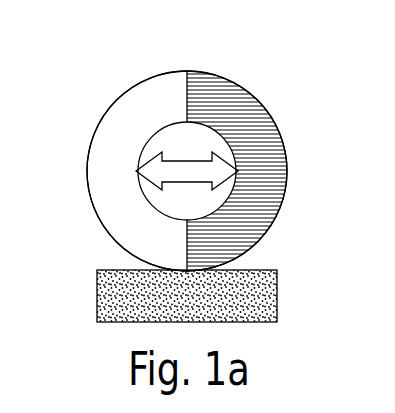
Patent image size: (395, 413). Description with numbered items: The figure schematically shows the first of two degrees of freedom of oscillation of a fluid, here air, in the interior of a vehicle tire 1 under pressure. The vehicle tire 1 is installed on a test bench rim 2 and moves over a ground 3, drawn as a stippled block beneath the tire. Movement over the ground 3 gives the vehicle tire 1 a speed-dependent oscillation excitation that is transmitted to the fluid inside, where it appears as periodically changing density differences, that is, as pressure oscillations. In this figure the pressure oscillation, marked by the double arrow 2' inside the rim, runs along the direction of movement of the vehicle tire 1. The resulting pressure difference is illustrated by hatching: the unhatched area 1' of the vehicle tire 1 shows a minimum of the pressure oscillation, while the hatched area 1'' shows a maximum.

The vehicle tire 1 is at (167, 171).
The minimum of the pressure oscillation 1' is at (105, 171).
The maximum of the pressure oscillation 1'' is at (273, 171).
The test bench rim 2 is at (187, 113).
The bore diameter 2' is at (233, 111).
The ground 3 is at (258, 293).